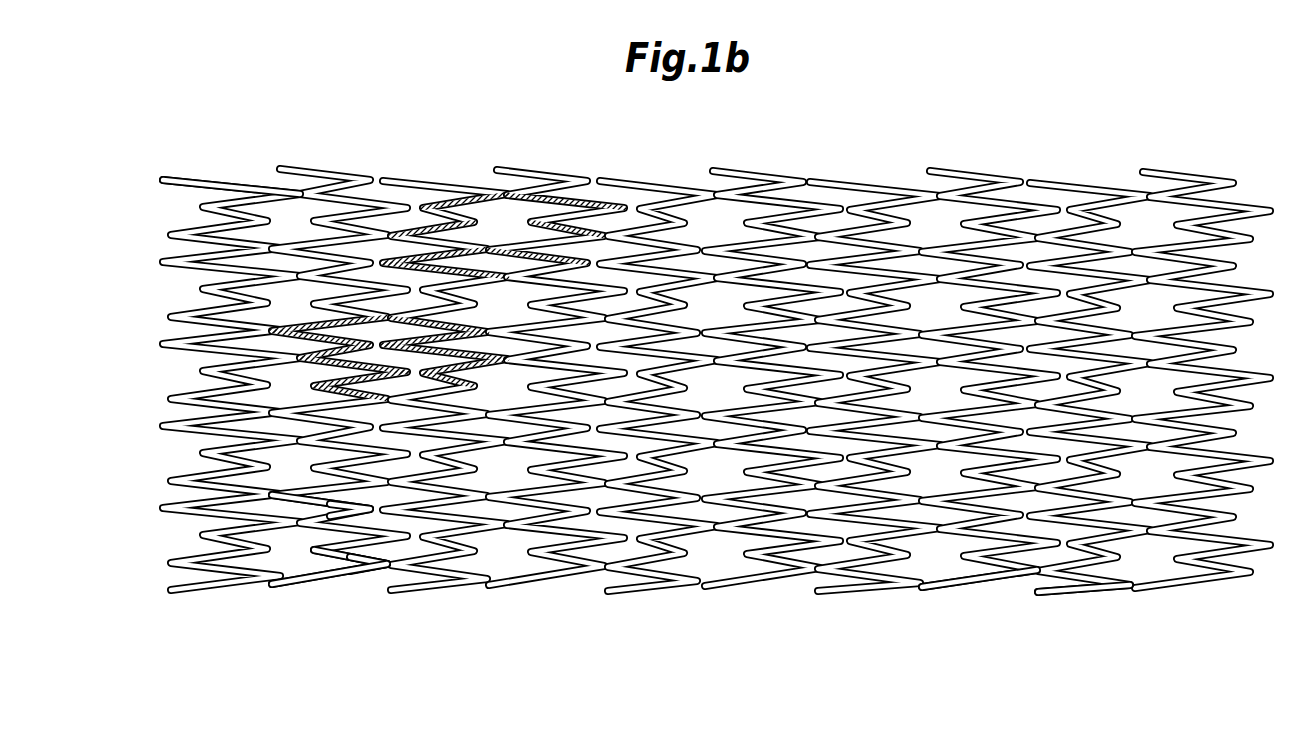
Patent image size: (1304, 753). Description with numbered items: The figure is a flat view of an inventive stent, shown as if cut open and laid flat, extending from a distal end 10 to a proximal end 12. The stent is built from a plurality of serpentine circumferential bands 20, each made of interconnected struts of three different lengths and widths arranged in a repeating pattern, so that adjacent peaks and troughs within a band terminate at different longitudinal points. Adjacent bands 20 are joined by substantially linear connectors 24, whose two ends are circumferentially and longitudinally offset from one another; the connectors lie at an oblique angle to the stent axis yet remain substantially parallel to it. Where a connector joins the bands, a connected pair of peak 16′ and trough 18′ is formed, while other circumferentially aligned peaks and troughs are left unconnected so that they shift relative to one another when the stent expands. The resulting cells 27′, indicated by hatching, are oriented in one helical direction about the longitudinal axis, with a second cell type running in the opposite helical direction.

The distal end 10 is at (697, 378).
The proximal end 12 is at (155, 168).
The connected peak 16′ is at (388, 566).
The connected trough 18′ is at (400, 564).
The serpentine circumferential band 20 is at (1057, 594).
The connector 24 is at (392, 566).
The cell 27′ is at (197, 302).